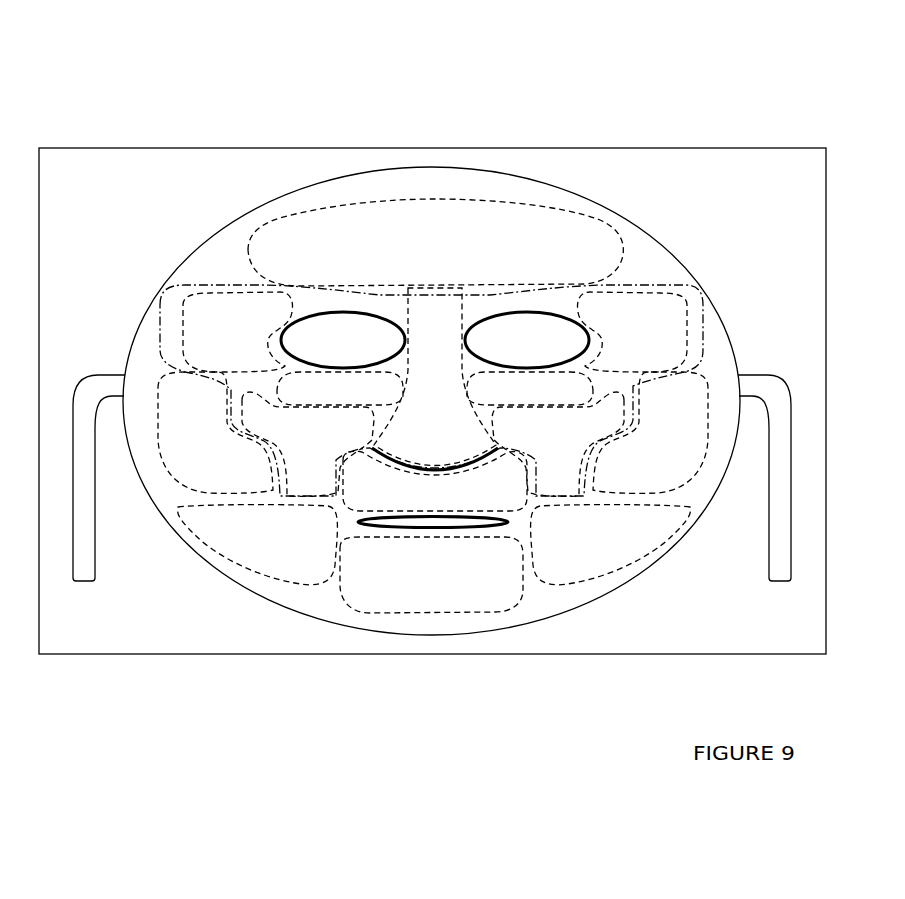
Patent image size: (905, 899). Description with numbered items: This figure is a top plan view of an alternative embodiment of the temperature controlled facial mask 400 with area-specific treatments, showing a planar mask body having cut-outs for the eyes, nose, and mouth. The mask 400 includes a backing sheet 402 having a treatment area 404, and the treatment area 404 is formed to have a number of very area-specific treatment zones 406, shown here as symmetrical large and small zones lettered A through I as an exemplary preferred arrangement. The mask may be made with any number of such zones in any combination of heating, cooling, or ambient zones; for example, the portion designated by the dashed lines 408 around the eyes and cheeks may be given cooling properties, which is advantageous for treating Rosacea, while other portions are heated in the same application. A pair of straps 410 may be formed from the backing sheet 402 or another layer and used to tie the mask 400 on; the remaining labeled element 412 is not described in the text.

The temperature controlled facial mask 400 is at (151, 109).
The backing sheet 402 is at (758, 176).
The treatment area 404 is at (431, 188).
The treatment zones 406 is at (400, 590).
The dashed lines 408 is at (703, 328).
The straps 410 is at (163, 492).
The strap 412 is at (780, 548).